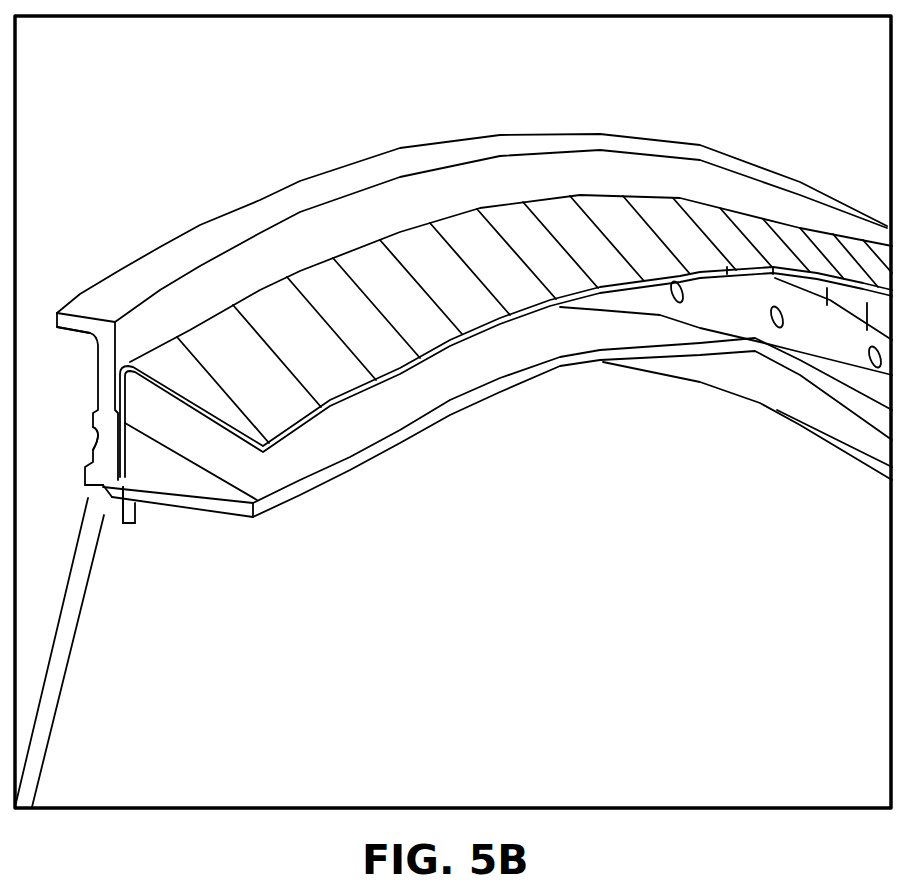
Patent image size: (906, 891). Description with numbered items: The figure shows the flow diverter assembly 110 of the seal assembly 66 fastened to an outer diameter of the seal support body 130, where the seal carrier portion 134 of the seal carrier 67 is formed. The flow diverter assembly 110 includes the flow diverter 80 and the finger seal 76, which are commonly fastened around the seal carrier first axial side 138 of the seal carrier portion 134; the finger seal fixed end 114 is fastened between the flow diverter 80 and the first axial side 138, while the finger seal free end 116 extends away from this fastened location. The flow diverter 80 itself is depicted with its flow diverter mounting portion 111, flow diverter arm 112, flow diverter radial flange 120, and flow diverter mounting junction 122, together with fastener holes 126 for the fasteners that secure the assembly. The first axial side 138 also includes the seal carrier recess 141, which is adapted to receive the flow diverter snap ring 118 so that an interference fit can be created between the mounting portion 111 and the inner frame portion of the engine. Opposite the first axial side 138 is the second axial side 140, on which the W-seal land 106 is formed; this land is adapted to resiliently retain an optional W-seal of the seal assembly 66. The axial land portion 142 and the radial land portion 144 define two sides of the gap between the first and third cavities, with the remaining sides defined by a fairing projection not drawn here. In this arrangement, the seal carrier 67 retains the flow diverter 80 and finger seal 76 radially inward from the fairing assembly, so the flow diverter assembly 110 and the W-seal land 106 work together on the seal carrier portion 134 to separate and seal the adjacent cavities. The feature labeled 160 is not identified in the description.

The seal assembly 66 is at (792, 137).
The seal carrier 67 is at (43, 632).
The finger seal 76 is at (447, 207).
The flow diverter 80 is at (497, 388).
The W-seal land 106 is at (95, 381).
The flow diverter assembly 110 is at (395, 450).
The flow diverter mounting portion 111 is at (112, 495).
The flow diverter arm 112 is at (553, 337).
The finger seal fixed end 114 is at (137, 392).
The finger seal free end 116 is at (352, 320).
The flow diverter snap ring 118 is at (103, 490).
The flow diverter radial flange 120 is at (182, 428).
The flow diverter mounting junction 122 is at (117, 513).
The fastener holes 126 is at (112, 440).
The seal support body 130 is at (144, 730).
The seal carrier portion 134 is at (605, 172).
The seal carrier first axial side 138 is at (203, 300).
The second axial side 140 is at (97, 366).
The seal carrier recess 141 is at (107, 487).
The axial land portion 142 is at (270, 262).
The radial land portion 144 is at (97, 309).
The gap 160 is at (222, 535).